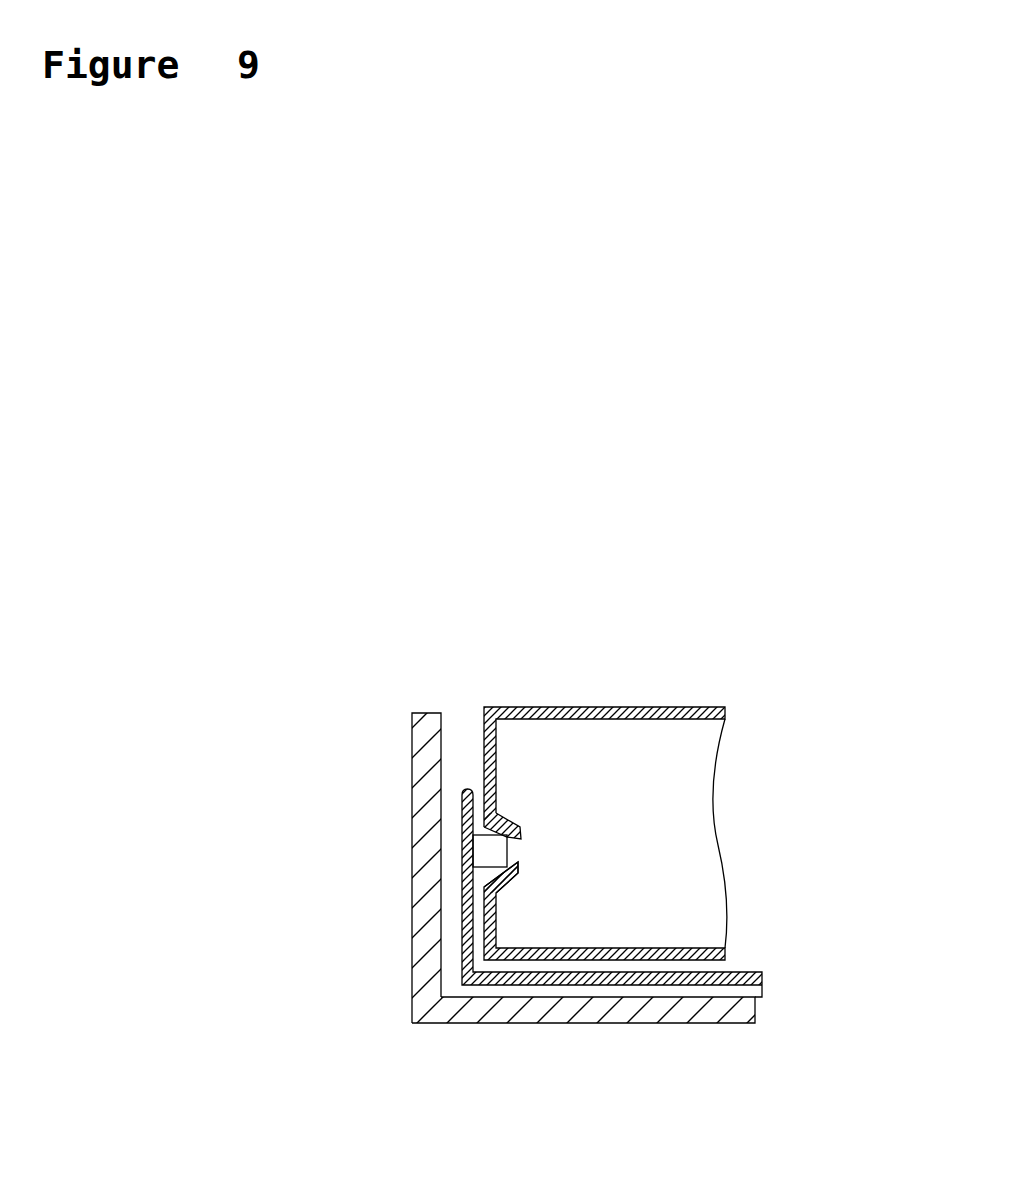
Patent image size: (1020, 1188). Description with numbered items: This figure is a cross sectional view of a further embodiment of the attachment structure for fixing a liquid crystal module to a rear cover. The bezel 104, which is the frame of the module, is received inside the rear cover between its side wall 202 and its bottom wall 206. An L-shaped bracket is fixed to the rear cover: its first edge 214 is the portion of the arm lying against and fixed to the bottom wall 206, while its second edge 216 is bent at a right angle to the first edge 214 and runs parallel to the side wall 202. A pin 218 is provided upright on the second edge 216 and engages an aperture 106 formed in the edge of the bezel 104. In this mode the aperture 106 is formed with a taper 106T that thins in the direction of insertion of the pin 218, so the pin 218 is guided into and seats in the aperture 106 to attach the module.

The bezel 104 is at (617, 707).
The aperture 106 is at (523, 852).
The taper 106T is at (493, 806).
The side wall 202 is at (412, 781).
The bottom wall 206 is at (607, 1023).
The first edge 214 is at (740, 968).
The second edge 216 is at (462, 925).
The pin 218 is at (487, 851).